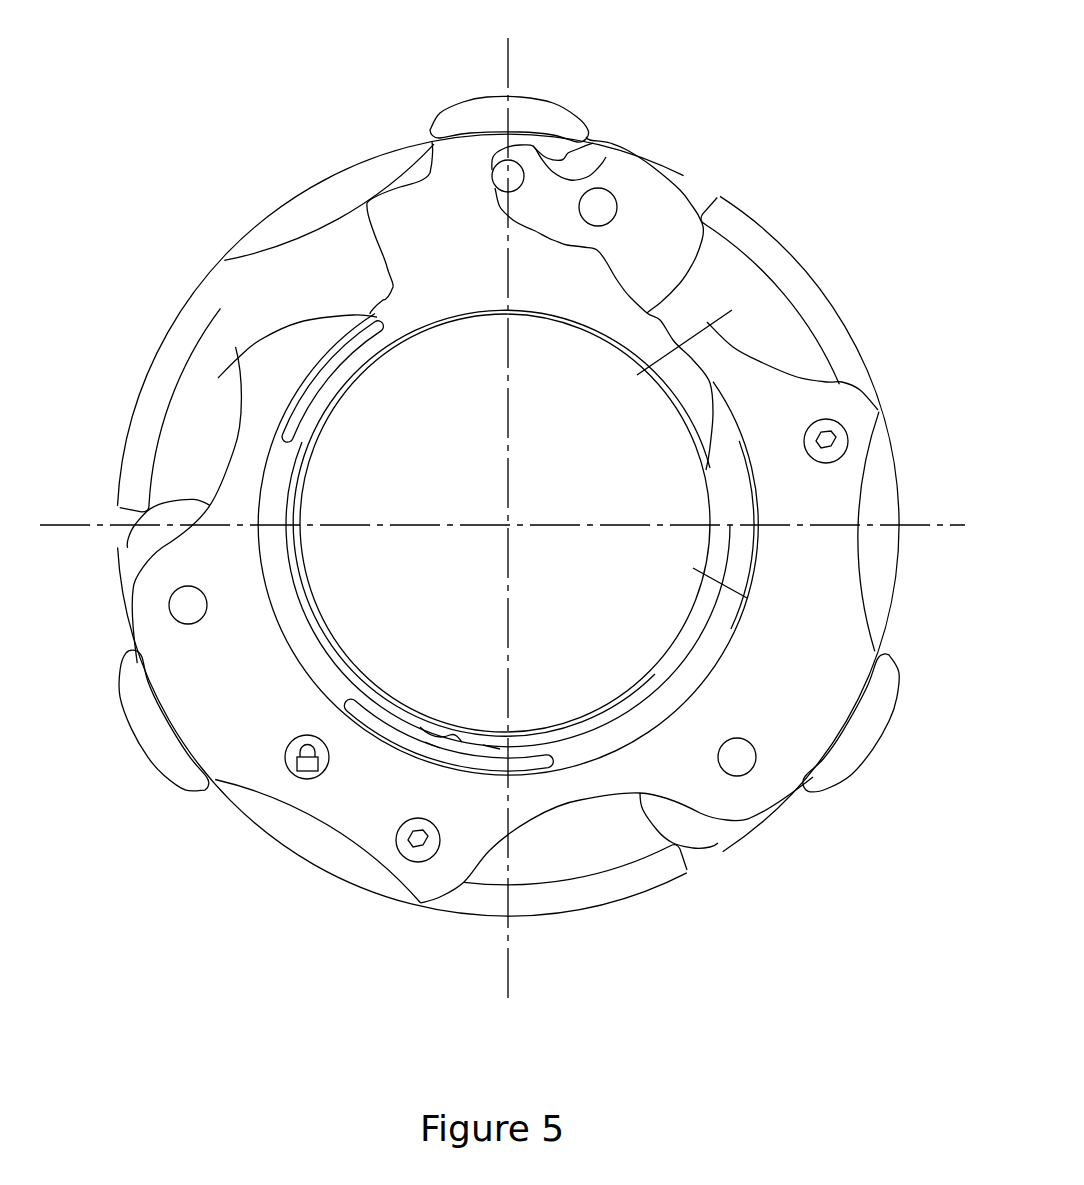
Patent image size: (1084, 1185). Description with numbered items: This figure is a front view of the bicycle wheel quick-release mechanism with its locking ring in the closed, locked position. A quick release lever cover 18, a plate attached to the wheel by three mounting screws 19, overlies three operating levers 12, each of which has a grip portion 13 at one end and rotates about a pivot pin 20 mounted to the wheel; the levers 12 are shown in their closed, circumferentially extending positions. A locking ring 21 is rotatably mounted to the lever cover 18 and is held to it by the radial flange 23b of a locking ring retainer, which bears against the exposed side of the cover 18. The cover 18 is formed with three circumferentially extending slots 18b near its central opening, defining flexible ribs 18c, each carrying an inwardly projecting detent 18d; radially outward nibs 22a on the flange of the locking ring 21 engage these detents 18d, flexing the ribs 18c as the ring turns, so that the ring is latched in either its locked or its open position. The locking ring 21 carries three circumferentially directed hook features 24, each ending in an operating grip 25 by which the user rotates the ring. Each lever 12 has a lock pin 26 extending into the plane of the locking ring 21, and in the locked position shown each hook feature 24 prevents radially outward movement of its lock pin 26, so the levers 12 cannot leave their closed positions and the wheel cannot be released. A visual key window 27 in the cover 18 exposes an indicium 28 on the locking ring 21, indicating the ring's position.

The operating lever 12 is at (677, 223).
The grip portion 13 is at (840, 337).
The wheel quick release lever cover 18 is at (258, 673).
The circumferentially-extending slot 18b is at (433, 747).
The flexible rib 18c is at (487, 747).
The inwardly-projecting detent 18d is at (453, 733).
The mounting screw 19 is at (840, 437).
The pivot pin 20 is at (617, 198).
The locking ring 21 is at (425, 248).
The nib 22a is at (433, 720).
The radial flange 23b is at (722, 465).
The hook feature 24 is at (612, 142).
The operating grip 25 is at (530, 117).
The lock pin 26 is at (521, 190).
The visual key window 27 is at (292, 742).
The indicium 28 is at (297, 765).